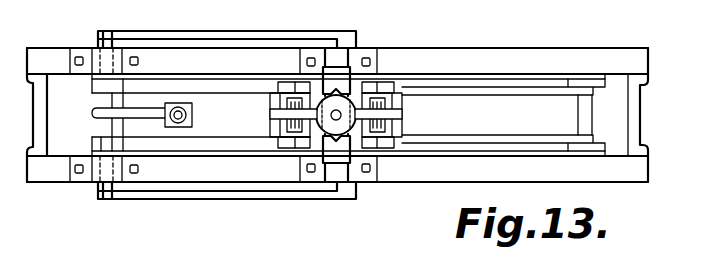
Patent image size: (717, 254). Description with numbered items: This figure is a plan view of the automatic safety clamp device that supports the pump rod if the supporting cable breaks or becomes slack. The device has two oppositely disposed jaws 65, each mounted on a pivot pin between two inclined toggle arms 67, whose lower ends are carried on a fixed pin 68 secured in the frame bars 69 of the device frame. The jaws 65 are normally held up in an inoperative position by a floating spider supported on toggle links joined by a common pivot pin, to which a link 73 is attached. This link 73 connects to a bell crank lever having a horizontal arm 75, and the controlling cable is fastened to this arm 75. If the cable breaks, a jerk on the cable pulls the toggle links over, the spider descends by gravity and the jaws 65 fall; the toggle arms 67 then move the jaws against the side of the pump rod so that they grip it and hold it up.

The link 73 is at (205, 31).
The horizontal arm 75 is at (90, 113).
The jaws 65 is at (271, 101).
The toggle arms 67 is at (472, 140).
The fixed pin 68 is at (578, 125).
The frame bars 69 is at (641, 168).